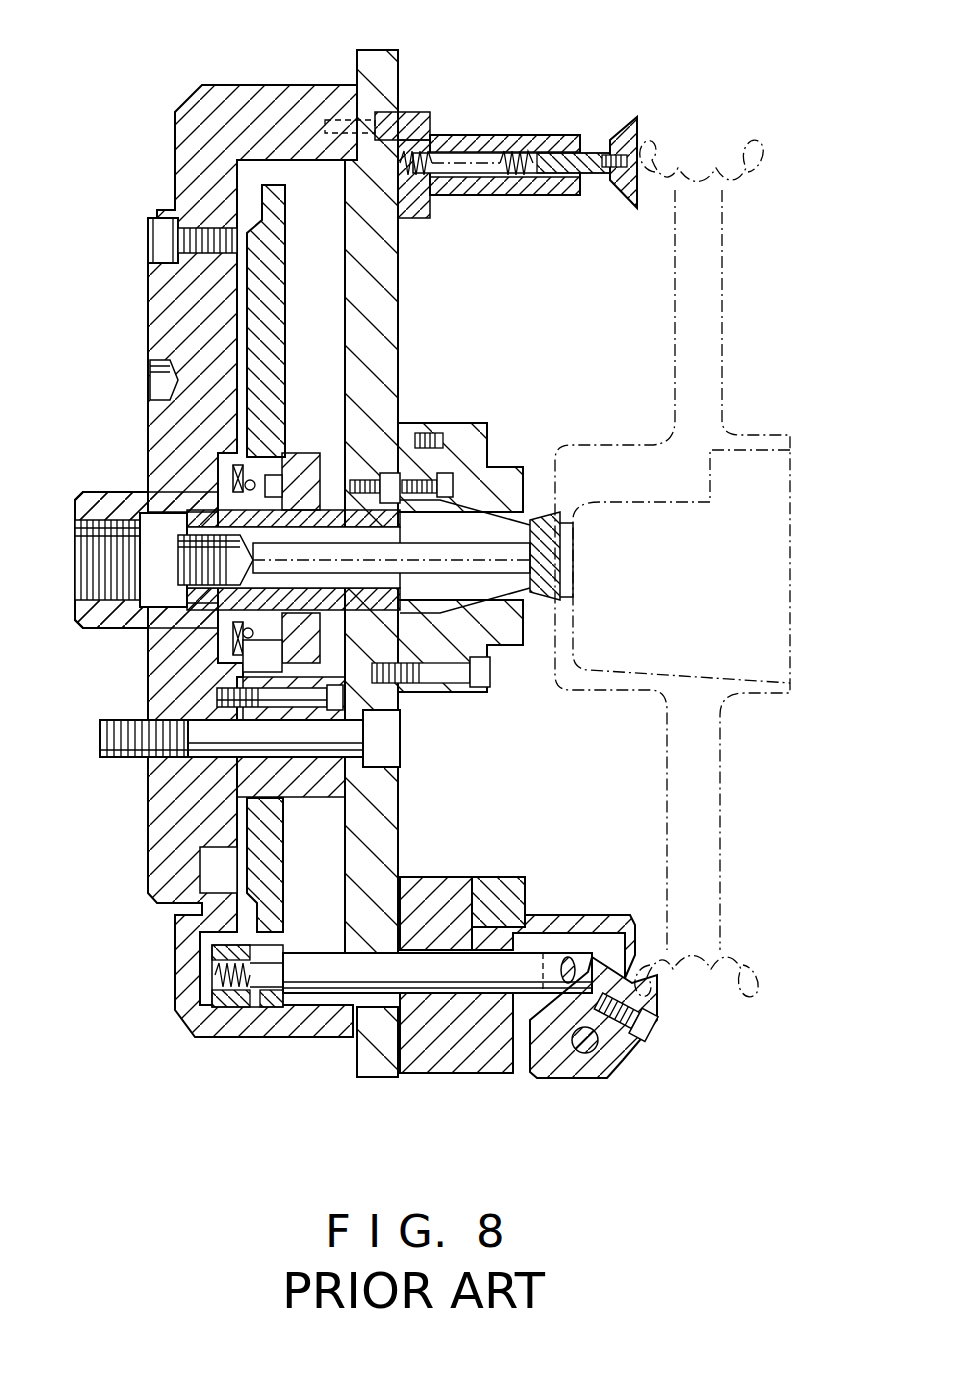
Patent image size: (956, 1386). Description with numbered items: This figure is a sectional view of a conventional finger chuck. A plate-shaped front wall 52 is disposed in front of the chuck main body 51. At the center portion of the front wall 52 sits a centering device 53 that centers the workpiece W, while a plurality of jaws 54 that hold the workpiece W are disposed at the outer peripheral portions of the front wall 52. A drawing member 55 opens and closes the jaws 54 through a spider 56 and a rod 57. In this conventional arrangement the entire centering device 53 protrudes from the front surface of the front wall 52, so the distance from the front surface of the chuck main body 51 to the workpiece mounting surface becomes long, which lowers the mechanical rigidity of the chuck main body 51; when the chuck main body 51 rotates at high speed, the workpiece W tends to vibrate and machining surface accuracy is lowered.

The chuck main body 51 is at (255, 80).
The front wall 52 is at (388, 325).
The centering device 53 is at (440, 690).
The jaws 54 is at (653, 1017).
The drawing member 55 is at (103, 492).
The spider 56 is at (272, 863).
The rod 57 is at (312, 990).
The workpiece W is at (727, 340).